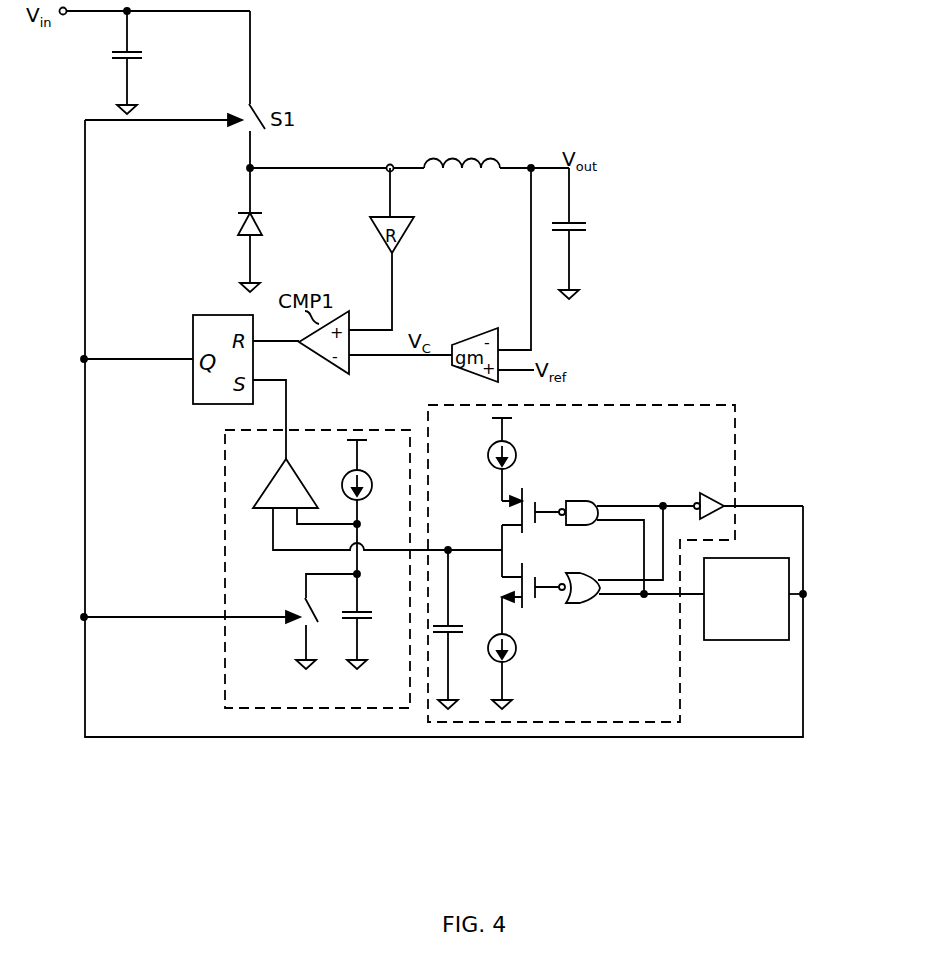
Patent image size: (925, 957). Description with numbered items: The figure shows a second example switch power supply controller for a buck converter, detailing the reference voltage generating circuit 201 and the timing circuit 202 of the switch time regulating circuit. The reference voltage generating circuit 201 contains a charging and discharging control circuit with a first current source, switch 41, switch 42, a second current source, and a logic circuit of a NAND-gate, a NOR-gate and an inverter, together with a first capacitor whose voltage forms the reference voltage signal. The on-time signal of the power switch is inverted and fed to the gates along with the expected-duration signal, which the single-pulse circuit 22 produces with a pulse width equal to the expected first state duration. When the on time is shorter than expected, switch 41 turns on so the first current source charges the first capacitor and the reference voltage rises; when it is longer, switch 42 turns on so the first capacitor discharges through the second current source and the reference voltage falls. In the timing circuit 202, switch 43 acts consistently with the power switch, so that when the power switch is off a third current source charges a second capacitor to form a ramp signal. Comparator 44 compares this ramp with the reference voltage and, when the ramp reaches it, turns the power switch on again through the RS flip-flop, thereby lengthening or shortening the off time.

The single-pulse circuit 22 is at (758, 641).
The switch 41 is at (528, 529).
The switch 42 is at (528, 604).
The switch 43 is at (316, 612).
The comparator 44 is at (295, 494).
The reference voltage generating circuit 201 is at (615, 565).
The timing circuit 202 is at (293, 569).